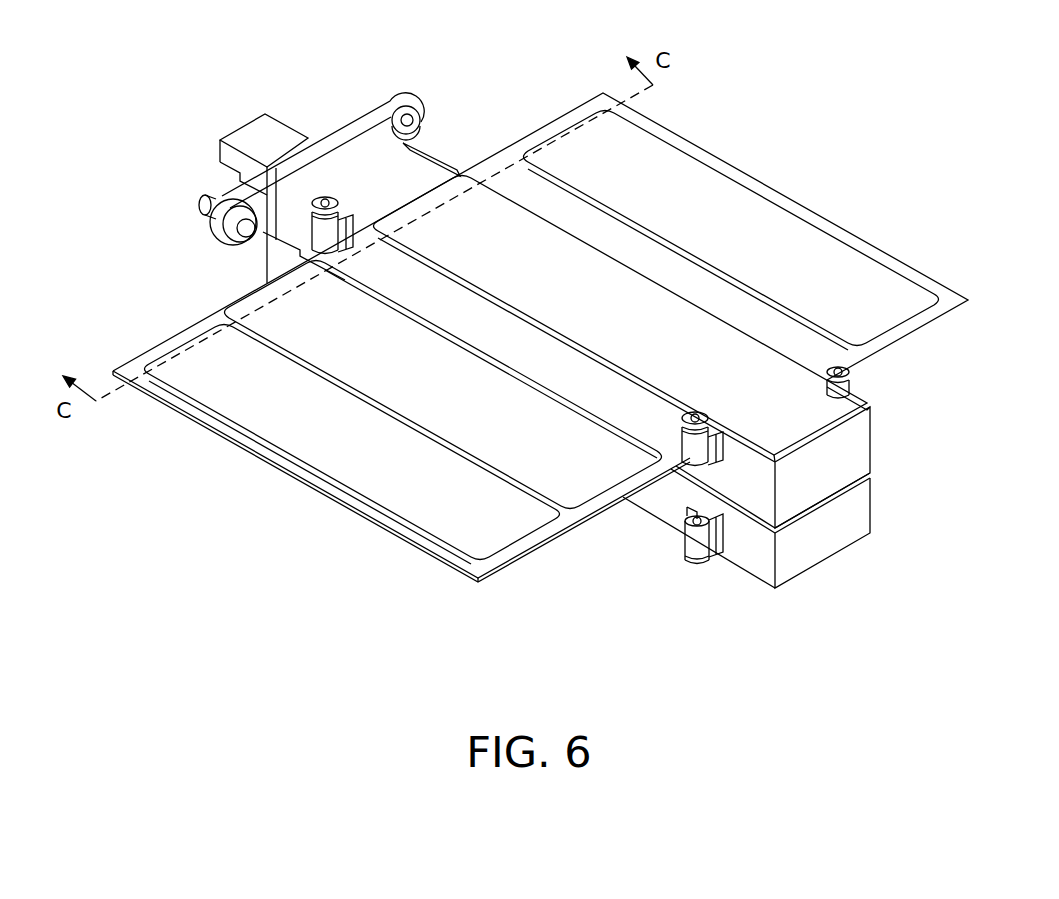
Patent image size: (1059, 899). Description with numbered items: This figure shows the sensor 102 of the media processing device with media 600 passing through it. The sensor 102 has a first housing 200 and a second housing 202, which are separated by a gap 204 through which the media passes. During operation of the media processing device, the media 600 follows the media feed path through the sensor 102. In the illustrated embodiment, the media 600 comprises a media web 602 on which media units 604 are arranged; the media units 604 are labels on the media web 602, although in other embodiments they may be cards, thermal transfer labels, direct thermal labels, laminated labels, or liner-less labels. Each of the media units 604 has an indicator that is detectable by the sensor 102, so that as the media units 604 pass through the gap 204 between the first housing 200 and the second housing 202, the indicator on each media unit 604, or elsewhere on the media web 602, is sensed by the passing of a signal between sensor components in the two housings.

The sensor 102 is at (300, 82).
The first housing 200 is at (853, 452).
The second housing 202 is at (763, 557).
The gap 204 is at (810, 507).
The media 600 is at (727, 88).
The media web 602 is at (443, 557).
The media units 604 is at (593, 140).